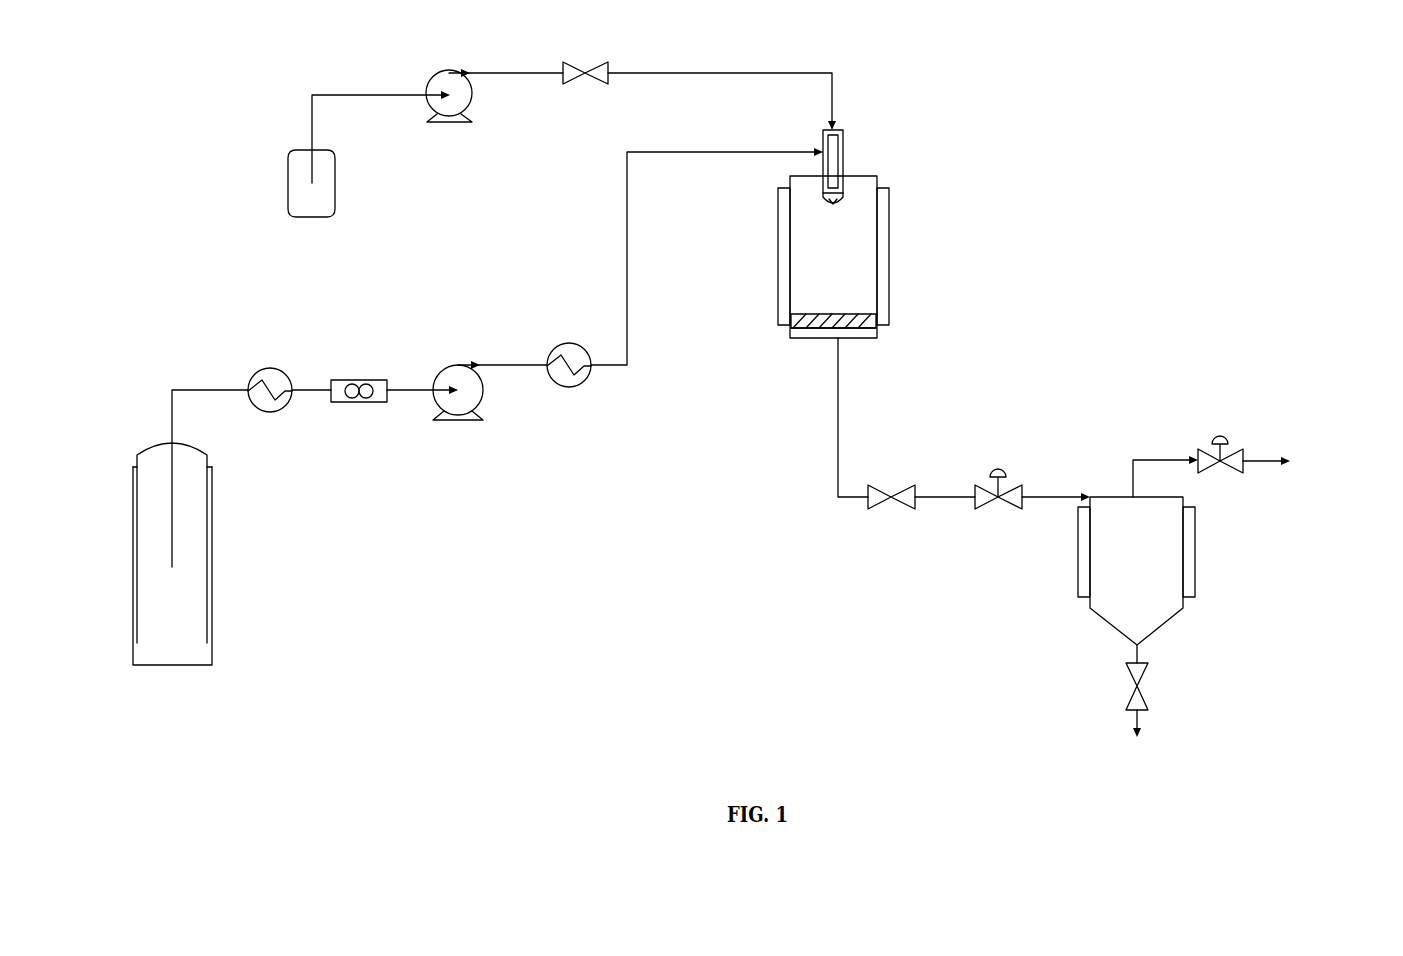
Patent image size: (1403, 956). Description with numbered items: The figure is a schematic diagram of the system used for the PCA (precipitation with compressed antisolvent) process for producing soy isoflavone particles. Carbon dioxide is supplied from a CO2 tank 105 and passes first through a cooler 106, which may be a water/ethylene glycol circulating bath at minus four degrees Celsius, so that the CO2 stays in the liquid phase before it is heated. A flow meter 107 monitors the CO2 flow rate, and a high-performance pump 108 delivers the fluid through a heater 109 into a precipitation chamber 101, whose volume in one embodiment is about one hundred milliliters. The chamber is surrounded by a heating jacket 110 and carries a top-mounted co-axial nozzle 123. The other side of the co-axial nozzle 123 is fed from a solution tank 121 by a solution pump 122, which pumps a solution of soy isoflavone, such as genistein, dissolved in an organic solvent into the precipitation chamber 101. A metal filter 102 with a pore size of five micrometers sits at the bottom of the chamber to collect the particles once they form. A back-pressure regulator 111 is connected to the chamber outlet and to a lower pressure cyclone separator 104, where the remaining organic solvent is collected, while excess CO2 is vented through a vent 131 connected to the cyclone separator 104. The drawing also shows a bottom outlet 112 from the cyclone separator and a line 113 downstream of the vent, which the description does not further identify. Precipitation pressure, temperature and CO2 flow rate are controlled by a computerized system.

The precipitation chamber 101 is at (852, 221).
The metal filter 102 is at (862, 322).
The cyclone separator 104 is at (1160, 603).
The CO2 tank 105 is at (172, 579).
The cooler 106 is at (268, 413).
The flow meter 107 is at (359, 373).
The high-performance pump 108 is at (458, 413).
The heater 109 is at (568, 389).
The heating jacket 110 is at (778, 253).
The back-pressure regulator 111 is at (997, 473).
The product outlet 112 is at (1136, 709).
The gas outlet 113 is at (1312, 464).
The solution tank 121 is at (311, 203).
The solution pump 122 is at (449, 115).
The co-axial nozzle 123 is at (843, 153).
The vent 131 is at (1221, 436).